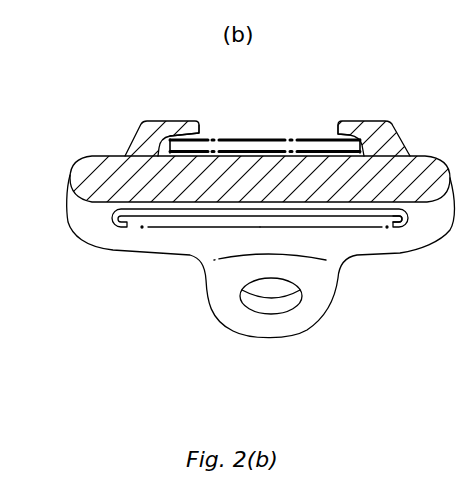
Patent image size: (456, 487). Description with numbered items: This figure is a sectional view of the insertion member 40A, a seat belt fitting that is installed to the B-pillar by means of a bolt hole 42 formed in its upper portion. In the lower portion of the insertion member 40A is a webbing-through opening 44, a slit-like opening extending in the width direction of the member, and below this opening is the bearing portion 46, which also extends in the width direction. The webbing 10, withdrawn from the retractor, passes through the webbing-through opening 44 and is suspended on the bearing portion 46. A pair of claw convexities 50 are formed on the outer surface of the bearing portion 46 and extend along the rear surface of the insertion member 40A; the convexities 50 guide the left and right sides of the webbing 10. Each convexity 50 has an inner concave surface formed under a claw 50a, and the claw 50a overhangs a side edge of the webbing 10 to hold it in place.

The webbing 10 is at (289, 137).
The insertion member 40A is at (104, 258).
The bolt hole 42 is at (272, 304).
The webbing-through opening 44 is at (385, 206).
The bearing portion 46 is at (177, 198).
The claw convexity 50 is at (140, 119).
The claw 50a is at (198, 119).